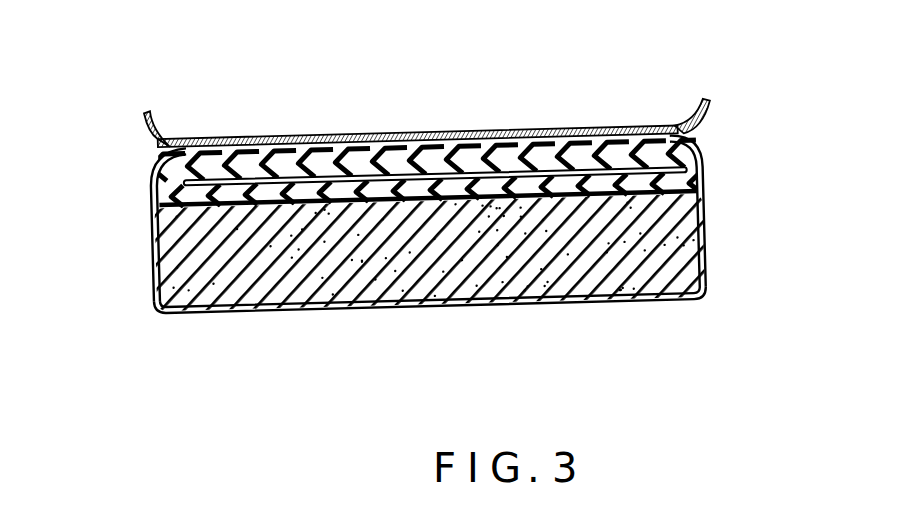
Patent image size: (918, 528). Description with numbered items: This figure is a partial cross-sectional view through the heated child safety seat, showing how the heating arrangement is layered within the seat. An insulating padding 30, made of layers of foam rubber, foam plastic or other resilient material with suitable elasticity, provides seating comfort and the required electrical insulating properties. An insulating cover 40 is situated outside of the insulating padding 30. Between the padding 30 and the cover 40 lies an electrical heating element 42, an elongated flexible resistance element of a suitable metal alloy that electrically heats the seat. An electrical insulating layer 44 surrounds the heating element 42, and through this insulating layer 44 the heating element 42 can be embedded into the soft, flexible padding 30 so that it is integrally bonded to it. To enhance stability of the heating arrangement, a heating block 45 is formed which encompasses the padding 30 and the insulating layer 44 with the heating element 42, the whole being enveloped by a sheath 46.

The insulating padding 30 is at (497, 228).
The insulating cover 40 is at (160, 120).
The electrical heating element 42 is at (558, 168).
The electrical insulating layer 44 is at (497, 157).
The heating block 45 is at (180, 240).
The sheath 46 is at (500, 302).